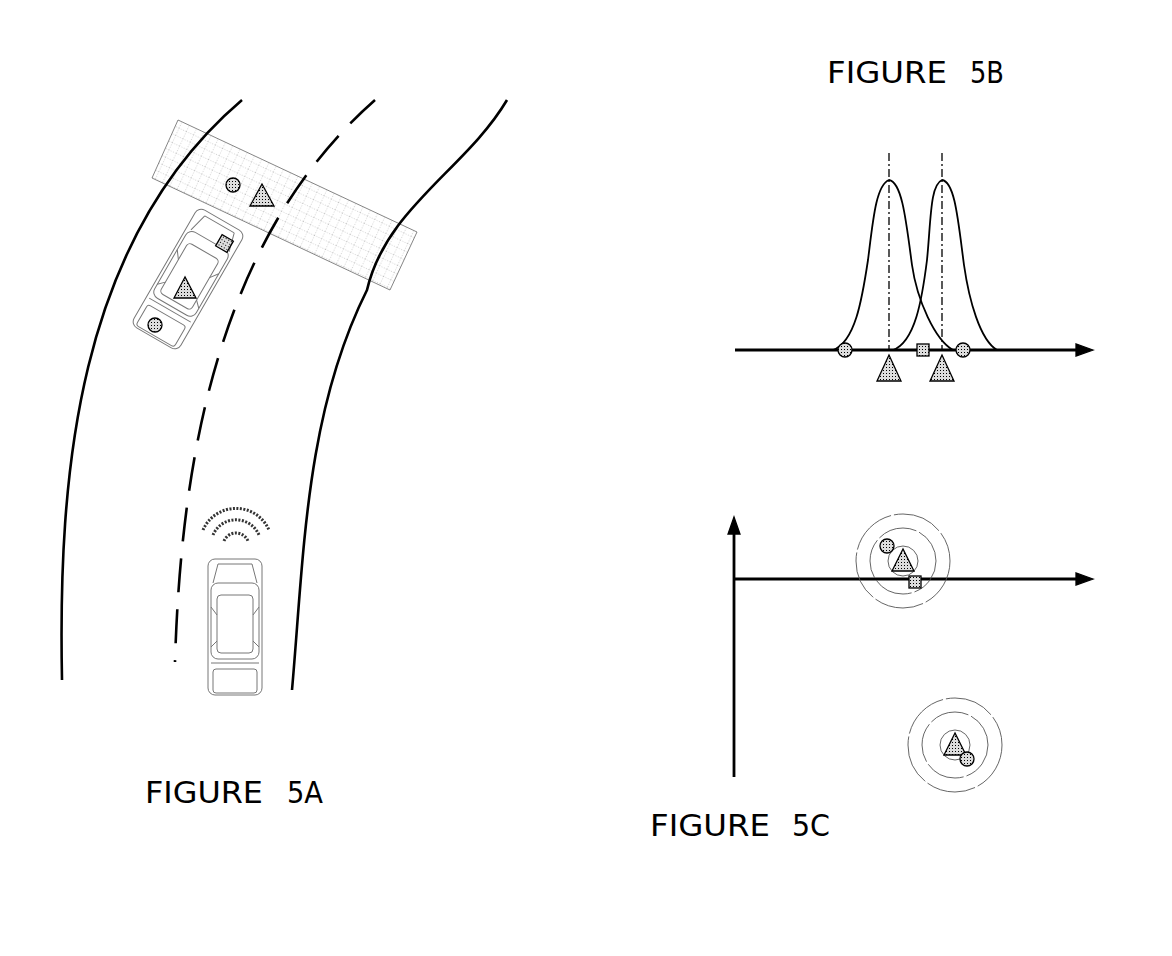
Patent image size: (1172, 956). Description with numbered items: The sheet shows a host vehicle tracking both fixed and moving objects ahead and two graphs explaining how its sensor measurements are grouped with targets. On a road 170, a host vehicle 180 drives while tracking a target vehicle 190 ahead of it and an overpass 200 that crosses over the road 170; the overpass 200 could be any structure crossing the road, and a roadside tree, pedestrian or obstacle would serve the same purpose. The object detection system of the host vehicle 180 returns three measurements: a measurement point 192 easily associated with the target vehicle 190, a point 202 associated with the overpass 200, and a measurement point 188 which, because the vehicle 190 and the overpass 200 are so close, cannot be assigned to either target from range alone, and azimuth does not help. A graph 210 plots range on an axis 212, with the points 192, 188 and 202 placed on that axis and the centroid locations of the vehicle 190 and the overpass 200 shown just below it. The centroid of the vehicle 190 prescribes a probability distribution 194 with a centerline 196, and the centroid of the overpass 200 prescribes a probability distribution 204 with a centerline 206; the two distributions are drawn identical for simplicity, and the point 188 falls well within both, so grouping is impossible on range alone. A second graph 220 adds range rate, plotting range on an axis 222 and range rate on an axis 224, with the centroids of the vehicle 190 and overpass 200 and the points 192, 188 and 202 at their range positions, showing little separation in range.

In FIG. 5A, the road 170 is at (318, 440).
In FIG. 5A, the host vehicle 180 is at (262, 647).
In FIG. 5A, the measurement point 188 is at (226, 250).
In FIG. 5B, the measurement point 188 is at (923, 358).
In FIG. 5C, the measurement point 188 is at (922, 588).
In FIG. 5A, the target vehicle 190 is at (185, 300).
In FIG. 5B, the target vehicle 190 is at (889, 383).
In FIG. 5C, the target vehicle 190 is at (912, 562).
In FIG. 5A, the measurement point 192 is at (153, 329).
In FIG. 5B, the measurement point 192 is at (840, 357).
In FIG. 5C, the measurement point 192 is at (880, 548).
In FIG. 5B, the probability distribution 194 is at (863, 285).
In FIG. 5B, the centerline 196 is at (889, 170).
In FIG. 5A, the overpass 200 is at (272, 198).
In FIG. 5B, the overpass 200 is at (945, 383).
In FIG. 5C, the overpass 200 is at (948, 743).
In FIG. 5A, the measurement point 202 is at (225, 188).
In FIG. 5B, the measurement point 202 is at (968, 355).
In FIG. 5C, the measurement point 202 is at (970, 765).
In FIG. 5B, the probability distribution 204 is at (965, 285).
In FIG. 5B, the centerline 206 is at (943, 170).
In FIG. 5B, the graph 210 is at (712, 208).
In FIG. 5B, the axis 212 is at (1045, 350).
In FIG. 5C, the graph 220 is at (1075, 707).
In FIG. 5C, the axis 222 is at (1005, 580).
In FIG. 5C, the axis 224 is at (734, 663).